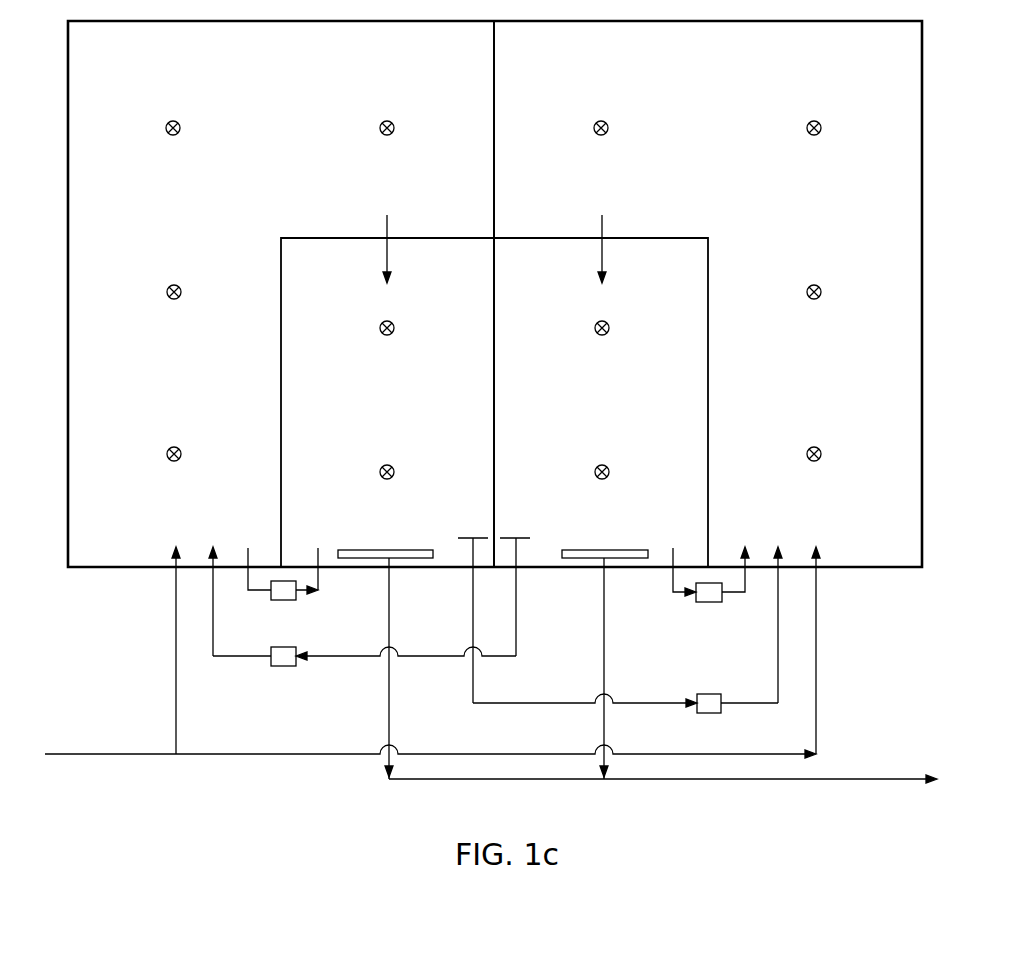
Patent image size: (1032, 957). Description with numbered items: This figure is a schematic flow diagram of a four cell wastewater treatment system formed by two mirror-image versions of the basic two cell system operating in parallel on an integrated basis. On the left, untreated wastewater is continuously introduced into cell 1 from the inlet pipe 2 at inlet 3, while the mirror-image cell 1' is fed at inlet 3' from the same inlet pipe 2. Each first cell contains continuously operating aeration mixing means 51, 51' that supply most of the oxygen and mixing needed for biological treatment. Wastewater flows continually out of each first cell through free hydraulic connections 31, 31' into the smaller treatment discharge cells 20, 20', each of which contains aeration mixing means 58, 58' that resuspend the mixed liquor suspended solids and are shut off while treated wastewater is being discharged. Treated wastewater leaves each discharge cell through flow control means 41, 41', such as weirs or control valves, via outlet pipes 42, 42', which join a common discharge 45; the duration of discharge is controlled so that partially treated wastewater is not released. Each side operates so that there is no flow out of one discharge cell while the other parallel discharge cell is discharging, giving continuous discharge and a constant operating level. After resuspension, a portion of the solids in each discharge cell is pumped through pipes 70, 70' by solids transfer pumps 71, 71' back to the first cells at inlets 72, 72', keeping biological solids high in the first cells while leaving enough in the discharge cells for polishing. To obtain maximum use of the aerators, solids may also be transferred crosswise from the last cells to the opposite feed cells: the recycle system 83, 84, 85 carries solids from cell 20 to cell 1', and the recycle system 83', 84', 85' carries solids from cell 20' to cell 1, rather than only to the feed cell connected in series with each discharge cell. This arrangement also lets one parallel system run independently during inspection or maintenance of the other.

The cell 1 is at (495, 294).
The cell 1' is at (707, 294).
The inlet pipe 2 is at (118, 757).
The inlet 3 is at (153, 650).
The inlet 3' is at (839, 650).
The treatment discharge cell 20 is at (473, 540).
The treatment discharge cell 20' is at (515, 540).
The hydraulic connection 31 is at (494, 391).
The hydraulic connection 31' is at (629, 249).
The flow control means 41 is at (384, 536).
The flow control means 41' is at (602, 536).
The outlet pipe 42 is at (423, 668).
The outlet pipe 42' is at (571, 668).
The discharge 45 is at (748, 782).
The aeration mixing means 51 is at (299, 311).
The aeration mixing means 51' is at (729, 311).
The aeration mixing means 58 is at (406, 420).
The aeration mixing means 58' is at (624, 420).
The pipe 70 is at (299, 581).
The pipe 70' is at (667, 582).
The solids transfer pump 71 is at (294, 610).
The solids transfer pump 71' is at (722, 612).
The inlet 72 is at (225, 601).
The inlet 72' is at (749, 582).
The recycle system 83 is at (452, 635).
The recycle system 83' is at (539, 611).
The recycle system 84 is at (625, 687).
The recycle system 84' is at (364, 675).
The recycle system 85 is at (794, 611).
The recycle system 85' is at (191, 542).